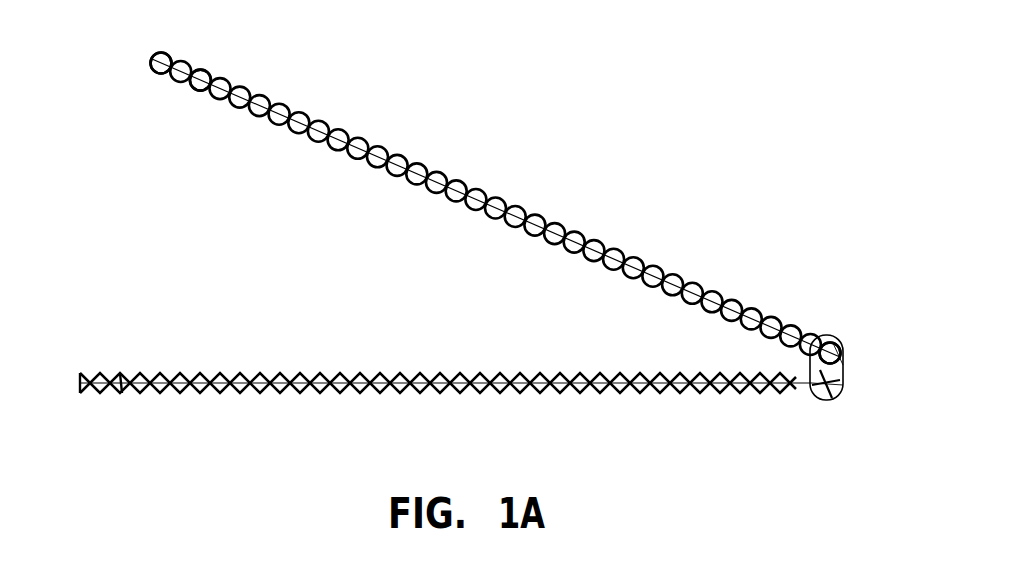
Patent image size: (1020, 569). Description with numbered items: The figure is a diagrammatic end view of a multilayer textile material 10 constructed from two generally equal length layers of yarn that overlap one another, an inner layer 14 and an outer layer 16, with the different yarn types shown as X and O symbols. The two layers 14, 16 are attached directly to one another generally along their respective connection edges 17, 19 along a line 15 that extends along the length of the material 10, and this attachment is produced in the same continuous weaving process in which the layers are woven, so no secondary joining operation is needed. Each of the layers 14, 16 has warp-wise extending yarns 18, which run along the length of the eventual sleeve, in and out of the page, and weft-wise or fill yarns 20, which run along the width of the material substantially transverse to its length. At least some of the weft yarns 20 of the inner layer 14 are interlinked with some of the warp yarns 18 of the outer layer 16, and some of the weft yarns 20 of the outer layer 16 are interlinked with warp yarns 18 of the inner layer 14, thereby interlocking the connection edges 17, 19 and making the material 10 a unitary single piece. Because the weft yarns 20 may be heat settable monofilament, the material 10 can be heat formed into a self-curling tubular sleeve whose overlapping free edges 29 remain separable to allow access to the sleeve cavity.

The textile material 10 is at (119, 73).
The inner layer 14 is at (197, 390).
The line 15 is at (842, 365).
The outer layer 16 is at (292, 112).
The connection edge 17 is at (832, 396).
The warp-wise extending yarns 18 is at (200, 93).
The connection edge 19 is at (842, 362).
The weft yarns 20 is at (821, 348).
The free edges 29 is at (152, 60).